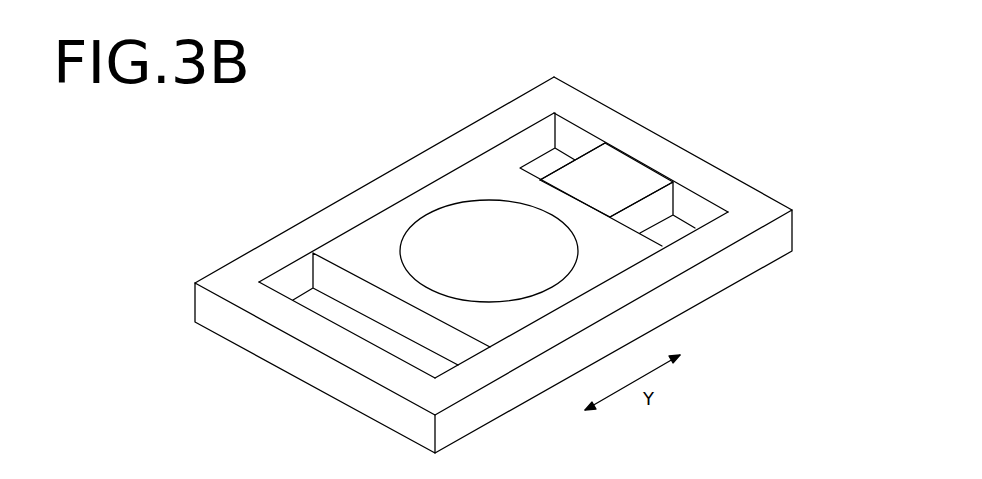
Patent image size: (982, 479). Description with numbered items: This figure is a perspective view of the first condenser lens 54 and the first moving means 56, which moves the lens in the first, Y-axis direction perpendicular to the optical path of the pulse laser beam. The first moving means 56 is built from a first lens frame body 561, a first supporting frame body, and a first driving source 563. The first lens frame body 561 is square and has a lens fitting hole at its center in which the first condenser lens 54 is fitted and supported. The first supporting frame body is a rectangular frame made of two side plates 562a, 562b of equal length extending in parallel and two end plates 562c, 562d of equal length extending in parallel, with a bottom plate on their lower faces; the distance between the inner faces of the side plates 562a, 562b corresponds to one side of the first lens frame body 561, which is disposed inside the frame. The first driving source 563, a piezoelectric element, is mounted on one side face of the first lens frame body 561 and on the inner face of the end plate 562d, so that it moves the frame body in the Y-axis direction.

The first moving means 56 is at (503, 266).
The first condenser lens 54 is at (458, 220).
The first lens frame body 561 is at (494, 229).
The side plate 562a is at (308, 236).
The side plate 562b is at (677, 259).
The end plate 562c is at (368, 365).
The end plate 562d is at (723, 191).
The first driving source 563 is at (633, 175).